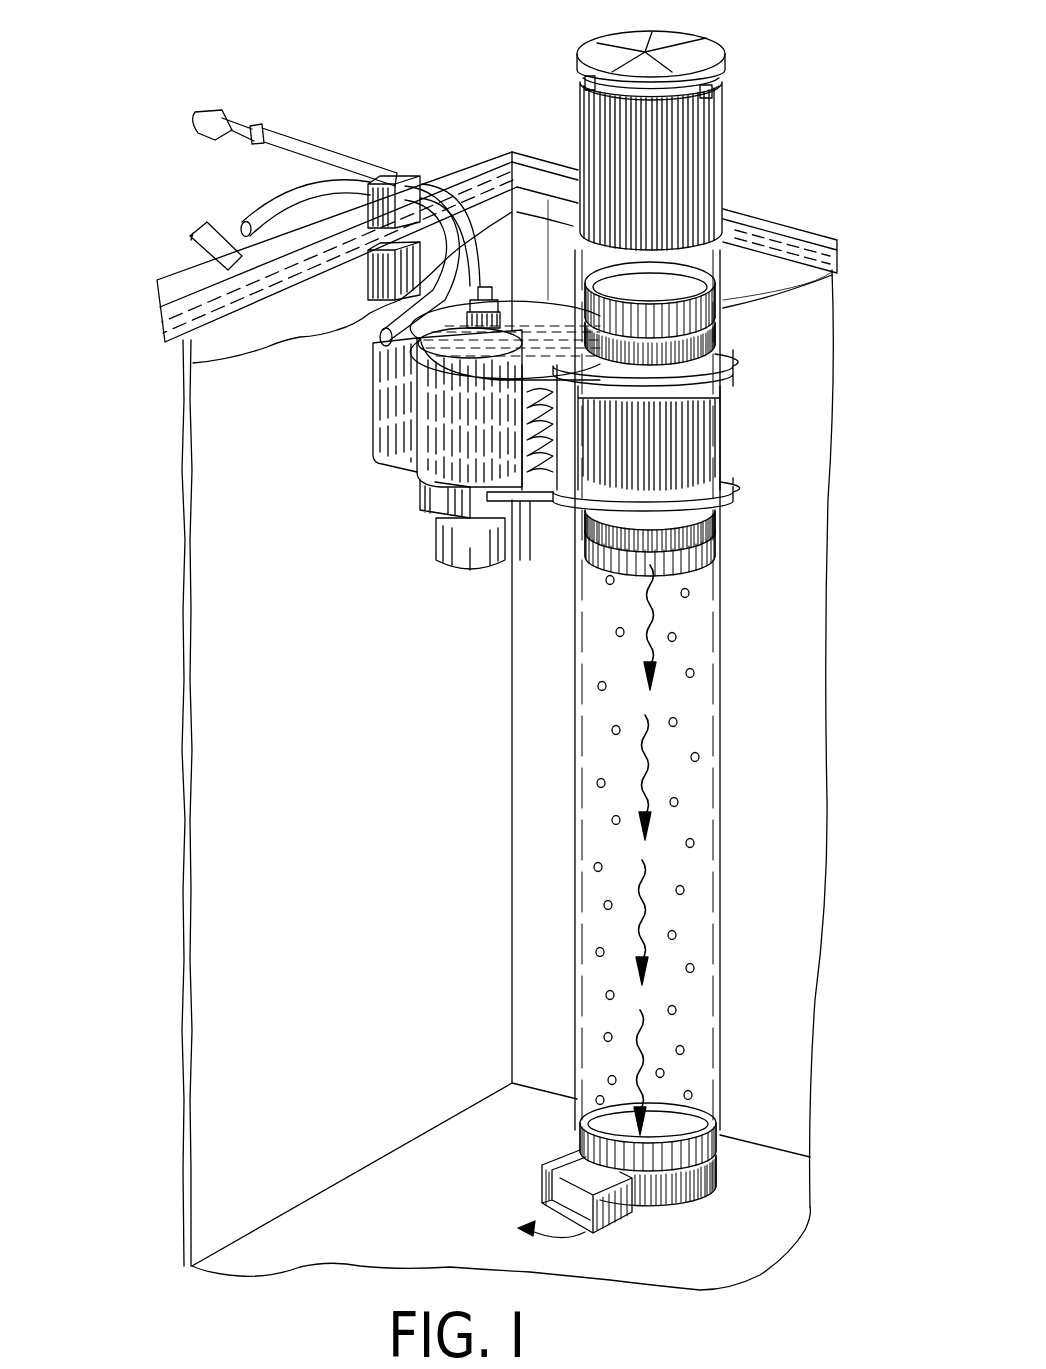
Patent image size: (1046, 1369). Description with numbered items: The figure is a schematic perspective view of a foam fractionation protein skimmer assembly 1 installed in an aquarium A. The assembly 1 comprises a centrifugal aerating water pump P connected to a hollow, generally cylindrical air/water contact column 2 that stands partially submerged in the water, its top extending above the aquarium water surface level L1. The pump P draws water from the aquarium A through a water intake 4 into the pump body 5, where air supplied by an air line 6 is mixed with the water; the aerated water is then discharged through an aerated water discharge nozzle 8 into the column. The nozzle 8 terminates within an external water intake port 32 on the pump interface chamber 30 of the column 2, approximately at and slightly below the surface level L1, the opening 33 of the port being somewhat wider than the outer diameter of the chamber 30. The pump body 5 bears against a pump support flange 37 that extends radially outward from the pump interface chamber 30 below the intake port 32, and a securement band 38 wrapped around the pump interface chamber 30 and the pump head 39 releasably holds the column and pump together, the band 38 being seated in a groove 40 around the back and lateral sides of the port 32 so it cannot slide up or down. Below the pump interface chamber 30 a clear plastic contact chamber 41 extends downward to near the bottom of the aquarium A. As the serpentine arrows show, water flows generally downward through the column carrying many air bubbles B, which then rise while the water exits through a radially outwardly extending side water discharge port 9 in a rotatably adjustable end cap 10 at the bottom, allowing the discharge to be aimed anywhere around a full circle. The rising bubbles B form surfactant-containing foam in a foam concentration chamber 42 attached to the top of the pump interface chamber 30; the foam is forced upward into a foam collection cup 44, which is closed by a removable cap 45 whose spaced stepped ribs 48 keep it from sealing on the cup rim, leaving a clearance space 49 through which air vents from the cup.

The foam fractionation protein skimmer assembly 1 is at (318, 211).
The contact column 2 is at (735, 610).
The water intake 4 is at (458, 557).
The pump body 5 is at (425, 485).
The air line 6 is at (305, 150).
The aerated water discharge nozzle 8 is at (535, 335).
The side water discharge port 9 is at (630, 1212).
The end cap 10 is at (707, 1175).
The pump interface chamber 30 is at (705, 432).
The water intake port 32 is at (568, 305).
The opening 33 is at (515, 215).
The pump support flange 37 is at (553, 530).
The securement band 38 is at (520, 380).
The pump head 39 is at (453, 297).
The groove 40 is at (720, 392).
The contact chamber 41 is at (722, 905).
The foam concentration chamber 42 is at (730, 257).
The foam collection cup 44 is at (720, 137).
The cap 45 is at (708, 47).
The stepped ribs 48 is at (580, 85).
The clearance space 49 is at (627, 90).
The aquarium A is at (215, 543).
The air bubbles B is at (700, 755).
The aquarium water surface level L1 is at (797, 300).
The centrifugal aerating water pump P is at (407, 442).